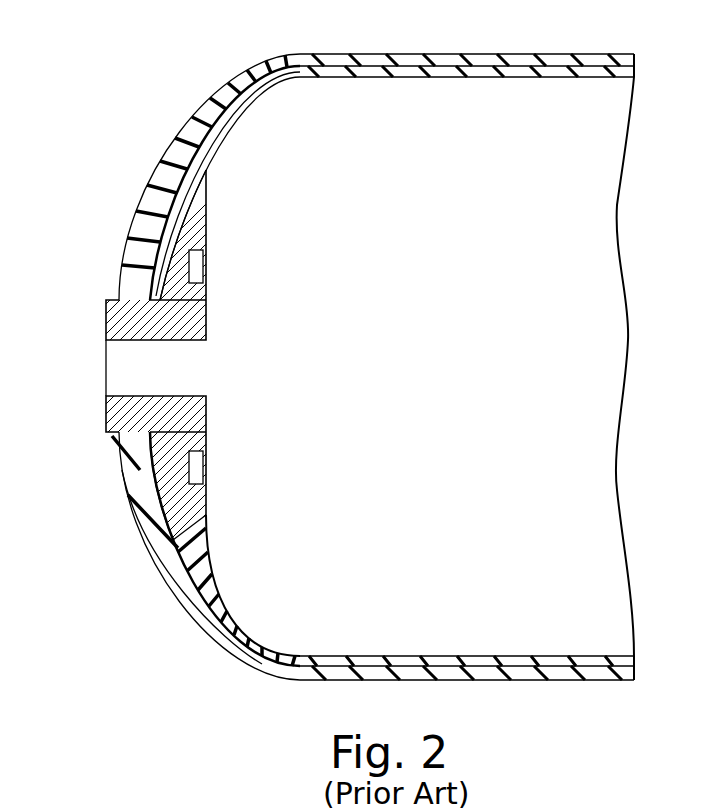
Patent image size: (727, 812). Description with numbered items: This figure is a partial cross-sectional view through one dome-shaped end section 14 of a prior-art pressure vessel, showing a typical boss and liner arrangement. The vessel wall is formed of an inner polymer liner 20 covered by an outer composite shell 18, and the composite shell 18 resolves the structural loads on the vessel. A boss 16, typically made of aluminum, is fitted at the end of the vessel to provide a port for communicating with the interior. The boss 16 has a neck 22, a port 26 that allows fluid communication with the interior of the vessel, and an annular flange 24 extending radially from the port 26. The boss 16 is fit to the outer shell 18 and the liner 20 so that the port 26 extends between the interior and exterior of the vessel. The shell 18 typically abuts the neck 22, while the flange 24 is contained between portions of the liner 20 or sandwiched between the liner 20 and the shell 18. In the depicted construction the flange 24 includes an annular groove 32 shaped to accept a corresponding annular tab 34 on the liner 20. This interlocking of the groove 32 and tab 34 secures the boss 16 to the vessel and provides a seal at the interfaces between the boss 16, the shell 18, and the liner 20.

The end section 14 is at (222, 70).
The boss 16 is at (135, 450).
The outer composite shell 18 is at (632, 60).
The inner polymer liner 20 is at (632, 68).
The neck 22 is at (115, 418).
The annular flange 24 is at (190, 232).
The port 26 is at (122, 380).
The annular groove 32 is at (182, 268).
The annular tab 34 is at (197, 272).